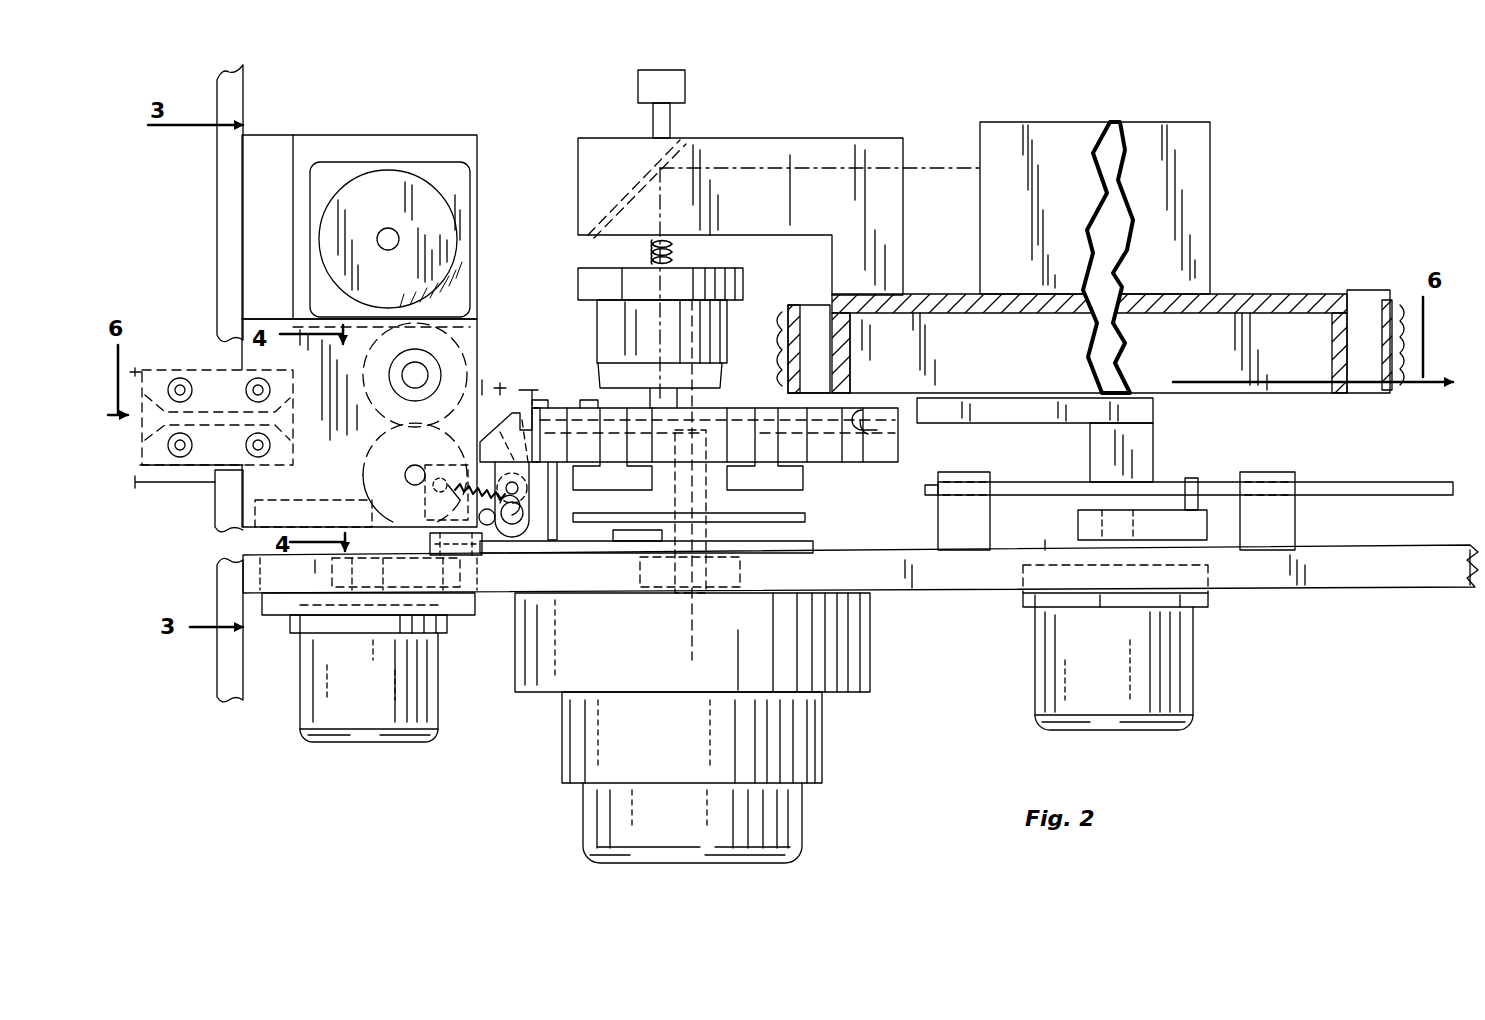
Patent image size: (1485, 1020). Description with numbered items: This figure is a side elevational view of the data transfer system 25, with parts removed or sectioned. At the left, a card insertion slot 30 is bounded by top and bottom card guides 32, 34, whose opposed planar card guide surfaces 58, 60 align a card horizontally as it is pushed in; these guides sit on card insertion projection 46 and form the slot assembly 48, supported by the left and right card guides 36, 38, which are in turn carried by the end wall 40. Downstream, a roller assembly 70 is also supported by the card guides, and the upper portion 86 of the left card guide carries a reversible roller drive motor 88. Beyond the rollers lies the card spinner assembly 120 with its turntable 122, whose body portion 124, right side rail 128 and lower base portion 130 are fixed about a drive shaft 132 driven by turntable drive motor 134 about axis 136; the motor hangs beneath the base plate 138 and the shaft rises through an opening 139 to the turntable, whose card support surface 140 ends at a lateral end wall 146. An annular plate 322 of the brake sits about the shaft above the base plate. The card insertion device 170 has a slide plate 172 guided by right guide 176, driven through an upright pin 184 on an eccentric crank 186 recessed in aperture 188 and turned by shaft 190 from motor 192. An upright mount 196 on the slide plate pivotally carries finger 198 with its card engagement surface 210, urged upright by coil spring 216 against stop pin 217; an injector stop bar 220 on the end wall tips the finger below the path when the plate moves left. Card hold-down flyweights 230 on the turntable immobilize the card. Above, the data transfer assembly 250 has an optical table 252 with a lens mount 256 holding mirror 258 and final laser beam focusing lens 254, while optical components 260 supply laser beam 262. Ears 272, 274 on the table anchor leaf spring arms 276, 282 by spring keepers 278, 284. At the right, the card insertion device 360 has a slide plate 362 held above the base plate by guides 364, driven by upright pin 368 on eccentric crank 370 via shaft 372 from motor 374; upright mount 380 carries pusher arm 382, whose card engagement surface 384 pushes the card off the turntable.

The data transfer system 25 is at (517, 162).
The card insertion slot 30 is at (140, 436).
The top card guide 32 is at (160, 368).
The bottom card guide 34 is at (165, 520).
The left card guide 36 is at (270, 140).
The right card guide 38 is at (480, 327).
The end wall 40 is at (232, 188).
The card insertion projection 46 is at (200, 485).
The slot assembly 48 is at (155, 485).
The card guide surface 58 is at (236, 410).
The card guide surface 60 is at (196, 432).
The roller assembly 70 is at (478, 305).
The upper portion 86 is at (477, 218).
The reversible roller drive motor 88 is at (420, 170).
The card spinner assembly 120 is at (595, 400).
The turntable 122 is at (620, 405).
The body portion 124 is at (860, 460).
The right side rail 128 is at (810, 518).
The lower base portion 130 is at (652, 497).
The drive shaft 132 is at (740, 497).
The turntable drive motor 134 is at (698, 744).
The axis 136 is at (693, 600).
The base plate 138 is at (1428, 598).
The opening 139 is at (742, 567).
The card support surface 140 is at (595, 402).
The lateral end wall 146 is at (872, 432).
The card insertion device 170 is at (482, 396).
The slide plate 172 is at (548, 545).
The right guide 176 is at (430, 535).
The upright pin 184 is at (447, 610).
The eccentric crank 186 is at (320, 577).
The aperture 188 is at (265, 545).
The shaft 190 is at (333, 634).
The motor 192 is at (392, 697).
The upright mount 196 is at (530, 595).
The finger 198 is at (555, 511).
The card engagement surface 210 is at (519, 414).
The coil spring 216 is at (474, 486).
The stop pin 217 is at (503, 548).
The injector stop bar 220 is at (286, 502).
The card hold-down flyweights 230 is at (605, 410).
The data transfer assembly 250 is at (840, 128).
The optical table 252 is at (1235, 295).
The final laser beam focusing lens 254 is at (730, 350).
The lens mount 256 is at (778, 138).
The mirror 258 is at (638, 178).
The optical components 260 is at (1122, 120).
The laser beam 262 is at (922, 160).
The ear 272 is at (852, 345).
The ear 274 is at (1340, 358).
The leaf spring arm 276 is at (810, 323).
The spring keeper 278 is at (783, 313).
The leaf spring arm 282 is at (1370, 300).
The spring keeper 284 is at (1400, 307).
The annular plate 322 is at (815, 545).
The card insertion device 360 is at (1330, 452).
The slide plate 362 is at (1420, 490).
The guides 364 is at (990, 512).
The upright pin 368 is at (1205, 497).
The eccentric crank 370 is at (1155, 515).
The shaft 372 is at (1100, 530).
The motor 374 is at (1130, 655).
The upright mount 380 is at (1150, 433).
The pusher arm 382 is at (1025, 410).
The card engagement surface 384 is at (935, 400).